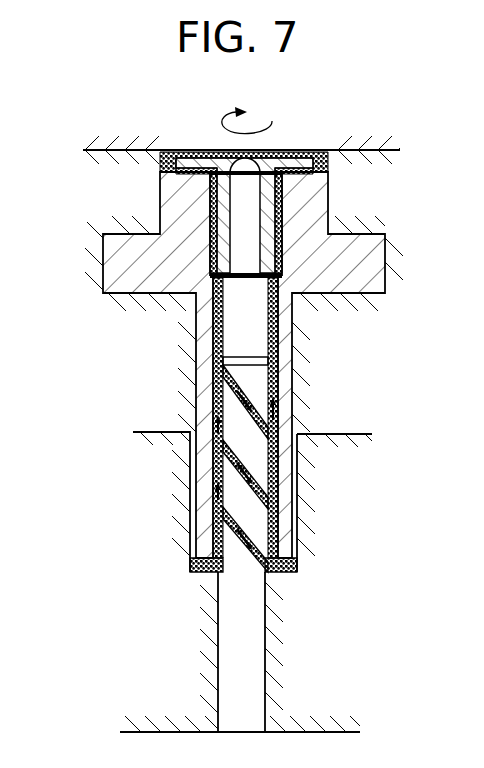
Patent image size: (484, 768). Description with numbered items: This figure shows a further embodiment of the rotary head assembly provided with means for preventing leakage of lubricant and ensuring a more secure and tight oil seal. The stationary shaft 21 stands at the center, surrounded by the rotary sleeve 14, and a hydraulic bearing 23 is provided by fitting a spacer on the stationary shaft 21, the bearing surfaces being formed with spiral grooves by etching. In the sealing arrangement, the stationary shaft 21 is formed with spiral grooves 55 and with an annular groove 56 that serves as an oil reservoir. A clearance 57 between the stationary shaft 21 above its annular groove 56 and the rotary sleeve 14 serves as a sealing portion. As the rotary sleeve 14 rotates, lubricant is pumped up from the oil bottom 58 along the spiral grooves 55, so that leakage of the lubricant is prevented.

The rotary sleeve 14 is at (120, 255).
The hydraulic bearing 23 is at (212, 207).
The annular groove 56 is at (216, 358).
The clearance 57 is at (277, 320).
The spiral grooves 55 is at (262, 481).
The oil bottom 58 is at (287, 576).
The stationary shaft 21 is at (235, 665).